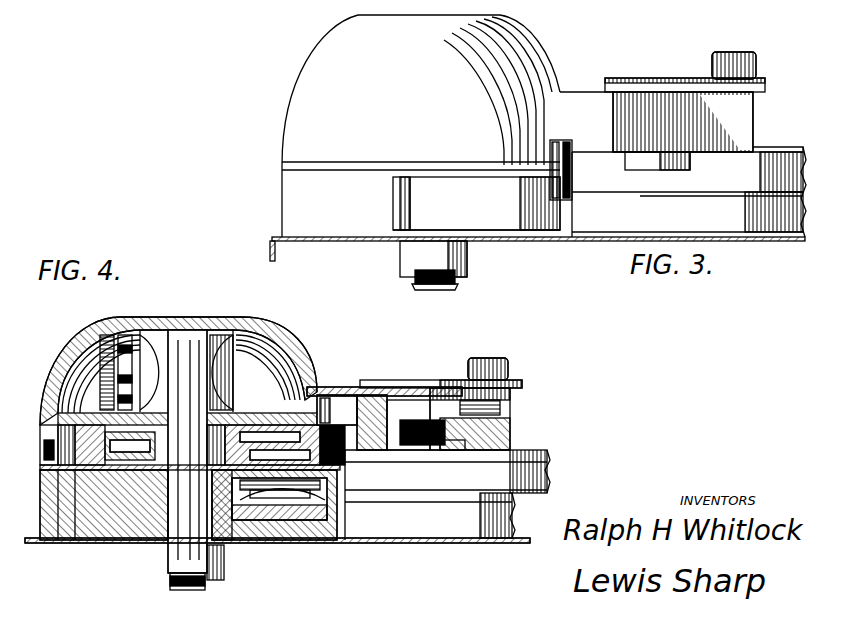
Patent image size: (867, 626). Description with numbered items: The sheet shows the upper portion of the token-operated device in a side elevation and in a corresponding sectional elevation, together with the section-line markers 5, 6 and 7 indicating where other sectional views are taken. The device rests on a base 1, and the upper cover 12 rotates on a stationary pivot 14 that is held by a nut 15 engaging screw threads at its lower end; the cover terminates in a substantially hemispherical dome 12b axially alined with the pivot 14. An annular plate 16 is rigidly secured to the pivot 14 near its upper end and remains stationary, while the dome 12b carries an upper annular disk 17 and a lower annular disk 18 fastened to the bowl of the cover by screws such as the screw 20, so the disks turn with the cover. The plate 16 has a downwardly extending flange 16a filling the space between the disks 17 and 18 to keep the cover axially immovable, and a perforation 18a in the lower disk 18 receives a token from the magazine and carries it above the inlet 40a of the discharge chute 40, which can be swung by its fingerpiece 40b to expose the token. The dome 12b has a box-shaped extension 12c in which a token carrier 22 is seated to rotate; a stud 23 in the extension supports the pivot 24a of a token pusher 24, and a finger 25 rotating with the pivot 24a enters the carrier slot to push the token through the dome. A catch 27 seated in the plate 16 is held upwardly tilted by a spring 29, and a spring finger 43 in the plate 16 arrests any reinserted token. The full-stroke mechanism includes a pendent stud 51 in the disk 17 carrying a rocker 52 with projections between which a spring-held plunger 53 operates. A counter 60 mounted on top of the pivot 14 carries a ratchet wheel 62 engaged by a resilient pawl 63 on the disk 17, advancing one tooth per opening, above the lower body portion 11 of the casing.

In FIG. 3, the base plate 1 is at (274, 239).
In FIG. 4, the base plate 1 is at (277, 540).
In FIG. 3, the lower body portion 11 is at (790, 200).
In FIG. 3, the upper cover 12 is at (780, 152).
In FIG. 3, the hemispherical dome 12b is at (322, 95).
In FIG. 4, the hemispherical dome 12b is at (100, 335).
In FIG. 3, the box-shaped extension 12c is at (640, 105).
In FIG. 4, the box-shaped extension 12c is at (505, 452).
In FIG. 3, the pivot 14 is at (418, 284).
In FIG. 4, the pivot 14 is at (180, 517).
In FIG. 3, the nut 15 is at (404, 258).
In FIG. 4, the nut 15 is at (214, 568).
In FIG. 4, the annular plate 16 is at (279, 503).
In FIG. 4, the flange 16a is at (220, 482).
In FIG. 4, the upper annular disk 17 is at (60, 412).
In FIG. 3, the lower annular disk 18 is at (282, 165).
In FIG. 4, the lower annular disk 18 is at (78, 544).
In FIG. 4, the perforation 18a is at (280, 509).
In FIG. 4, the screw 20 is at (58, 544).
In FIG. 4, the token carrier 22 is at (352, 387).
In FIG. 4, the stud 23 is at (432, 472).
In FIG. 4, the token pusher 24 is at (518, 378).
In FIG. 4, the pivot of token pusher 24a is at (420, 392).
In FIG. 4, the finger 25 is at (462, 448).
In FIG. 4, the catch 27 is at (262, 418).
In FIG. 4, the spring 29 is at (282, 435).
In FIG. 3, the discharge chute 40 is at (540, 208).
In FIG. 4, the inlet 40a is at (281, 518).
In FIG. 3, the fingerpiece 40b is at (527, 232).
In FIG. 3, the spring finger 43 is at (565, 165).
In FIG. 4, the pendent stud 51 is at (80, 472).
In FIG. 4, the rocker 52 is at (100, 470).
In FIG. 4, the spring-held plunger 53 is at (125, 470).
In FIG. 4, the counter 60 is at (192, 342).
In FIG. 4, the ratchet wheel 62 is at (128, 350).
In FIG. 4, the resilient pawl 63 is at (108, 335).
In FIG. 4, the section line 5- 5 is at (58, 413).
In FIG. 4, the section line 6- 6 is at (37, 430).
In FIG. 4, the section line 7- 7 is at (35, 470).